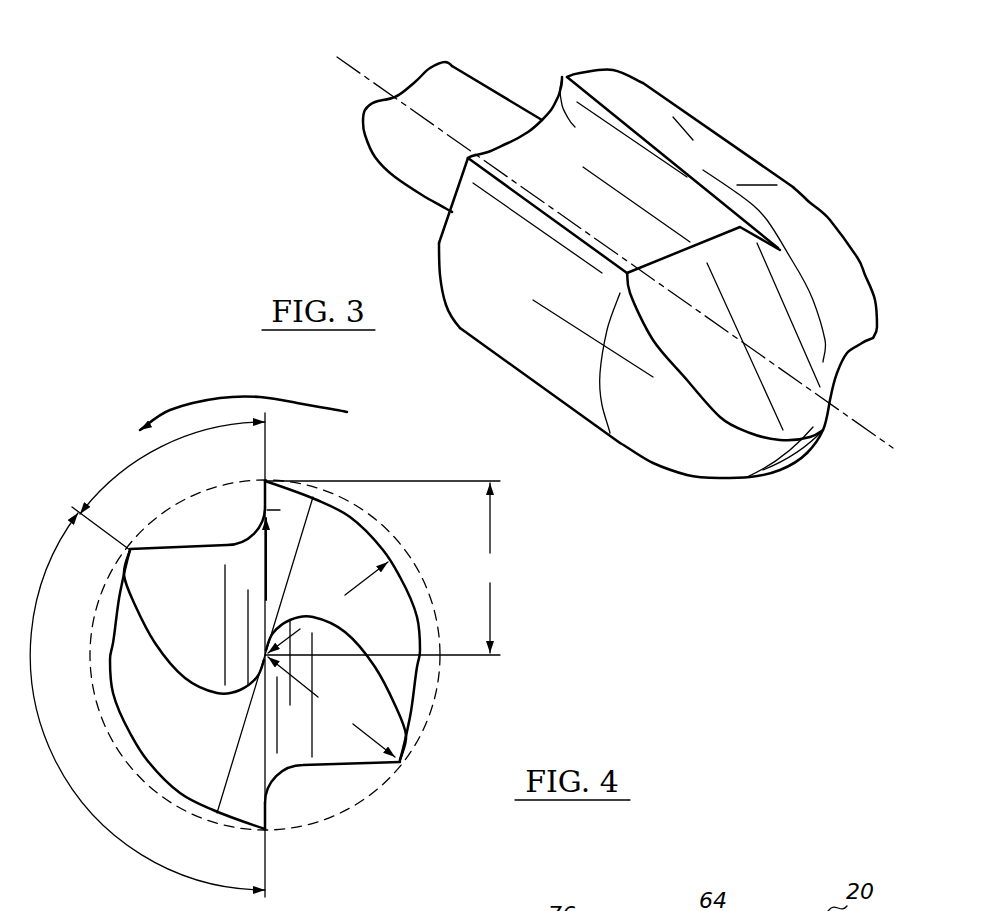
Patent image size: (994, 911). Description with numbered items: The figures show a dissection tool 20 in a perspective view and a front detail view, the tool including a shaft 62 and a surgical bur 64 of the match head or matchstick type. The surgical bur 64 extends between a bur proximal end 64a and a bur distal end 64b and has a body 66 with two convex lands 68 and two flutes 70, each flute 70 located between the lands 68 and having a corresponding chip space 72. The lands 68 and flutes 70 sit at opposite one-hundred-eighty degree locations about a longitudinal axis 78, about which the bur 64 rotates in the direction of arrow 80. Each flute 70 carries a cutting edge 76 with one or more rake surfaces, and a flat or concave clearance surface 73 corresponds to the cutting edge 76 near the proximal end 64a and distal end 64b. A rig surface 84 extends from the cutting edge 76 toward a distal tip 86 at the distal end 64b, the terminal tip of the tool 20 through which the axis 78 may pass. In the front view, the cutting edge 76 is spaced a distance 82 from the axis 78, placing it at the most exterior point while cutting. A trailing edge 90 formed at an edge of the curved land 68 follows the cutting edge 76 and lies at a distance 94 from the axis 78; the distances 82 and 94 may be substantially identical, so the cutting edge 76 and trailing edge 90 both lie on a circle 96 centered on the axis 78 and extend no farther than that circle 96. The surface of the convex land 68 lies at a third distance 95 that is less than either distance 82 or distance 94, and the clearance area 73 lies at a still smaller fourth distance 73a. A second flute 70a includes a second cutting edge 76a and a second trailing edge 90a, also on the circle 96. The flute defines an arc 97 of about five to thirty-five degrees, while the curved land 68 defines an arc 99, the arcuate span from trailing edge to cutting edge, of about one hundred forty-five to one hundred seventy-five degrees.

In FIG. 3, the dissection tool 20 is at (793, 91).
In FIG. 4, the dissection tool 20 is at (490, 691).
In FIG. 3, the shaft 62 is at (490, 85).
In FIG. 3, the surgical bur 64 is at (836, 205).
In FIG. 4, the surgical bur 64 is at (385, 549).
In FIG. 3, the bur proximal end 64a is at (436, 258).
In FIG. 3, the bur distal end 64b is at (843, 376).
In FIG. 3, the body 66 is at (614, 68).
In FIG. 3, the convex land 68 is at (693, 140).
In FIG. 4, the convex land 68 is at (349, 516).
In FIG. 3, the flute 70 is at (525, 173).
In FIG. 4, the flute 70 is at (355, 766).
In FIG. 4, the second flute 70a is at (183, 544).
In FIG. 3, the chip space 72 is at (546, 158).
In FIG. 4, the chip space 72 is at (209, 512).
In FIG. 3, the clearance surface 73 is at (560, 95).
In FIG. 4, the clearance surface 73 is at (263, 485).
In FIG. 4, the fourth distance 73a is at (263, 555).
In FIG. 3, the cutting edge 76 is at (703, 170).
In FIG. 4, the cutting edge 76 is at (268, 478).
In FIG. 4, the second cutting edge 76a is at (268, 832).
In FIG. 3, the longitudinal axis 78 is at (867, 430).
In FIG. 4, the longitudinal axis 78 is at (265, 655).
In FIG. 4, the arrow 80 is at (260, 413).
In FIG. 4, the distance 82 is at (385, 567).
In FIG. 3, the rig surface 84 is at (793, 292).
In FIG. 3, the distal tip 86 is at (837, 397).
In FIG. 3, the trailing edge 90 is at (470, 158).
In FIG. 4, the trailing edge 90 is at (401, 764).
In FIG. 4, the second trailing edge 90a is at (128, 548).
In FIG. 4, the distance 94 is at (331, 707).
In FIG. 4, the third distance 95 is at (328, 607).
In FIG. 4, the circle 96 is at (106, 740).
In FIG. 4, the arc 97 is at (172, 468).
In FIG. 4, the arc 99 is at (147, 701).